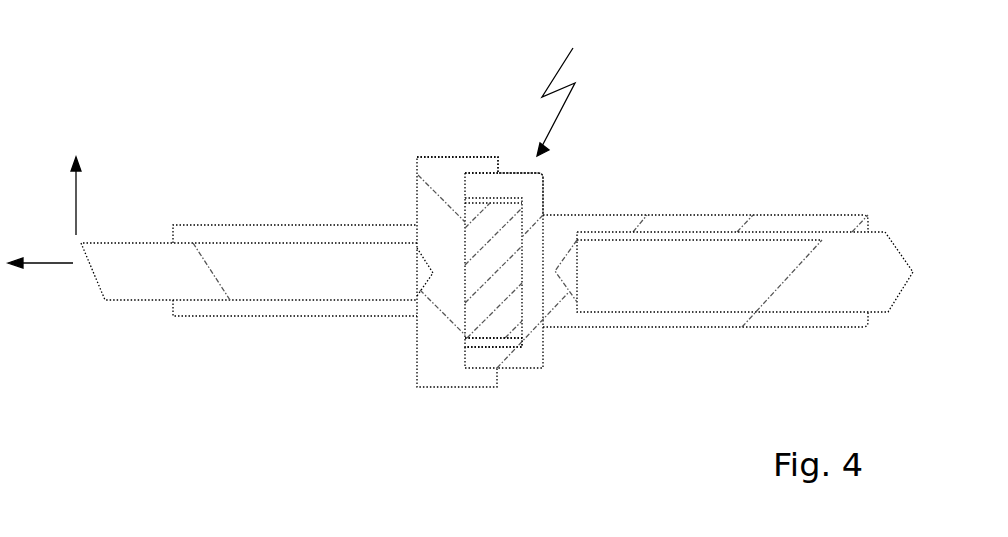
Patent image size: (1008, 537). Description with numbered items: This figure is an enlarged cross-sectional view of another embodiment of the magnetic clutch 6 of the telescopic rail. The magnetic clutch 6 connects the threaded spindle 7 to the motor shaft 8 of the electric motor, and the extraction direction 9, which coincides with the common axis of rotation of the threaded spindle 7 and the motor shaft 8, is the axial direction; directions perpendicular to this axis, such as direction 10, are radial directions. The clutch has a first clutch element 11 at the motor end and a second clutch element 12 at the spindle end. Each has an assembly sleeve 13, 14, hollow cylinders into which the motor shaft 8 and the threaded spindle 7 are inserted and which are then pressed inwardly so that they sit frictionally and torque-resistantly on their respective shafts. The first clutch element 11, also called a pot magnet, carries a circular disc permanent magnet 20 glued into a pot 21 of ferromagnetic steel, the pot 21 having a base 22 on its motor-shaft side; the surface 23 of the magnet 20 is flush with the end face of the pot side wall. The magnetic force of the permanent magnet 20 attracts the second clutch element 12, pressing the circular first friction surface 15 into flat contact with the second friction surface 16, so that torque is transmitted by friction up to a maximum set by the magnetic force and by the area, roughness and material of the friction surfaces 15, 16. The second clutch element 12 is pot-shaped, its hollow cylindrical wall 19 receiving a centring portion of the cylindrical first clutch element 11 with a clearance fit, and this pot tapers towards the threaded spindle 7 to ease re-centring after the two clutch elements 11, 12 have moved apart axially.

The magnetic clutch 6 is at (570, 95).
The threaded spindle 7 is at (175, 268).
The motor shaft 8 is at (723, 263).
The extraction direction 9 is at (55, 263).
The radial direction 10 is at (76, 215).
The first clutch element 11 is at (527, 355).
The second clutch element 12 is at (420, 355).
The assembly sleeve 13 is at (738, 328).
The assembly sleeve 14 is at (252, 312).
The first friction surface 15 is at (447, 340).
The second friction surface 16 is at (467, 198).
The hollow cylindrical wall 19 is at (473, 157).
The permanent magnet 20 is at (488, 285).
The pot 21 is at (522, 190).
The base 22 is at (537, 248).
The surface 23 is at (469, 245).